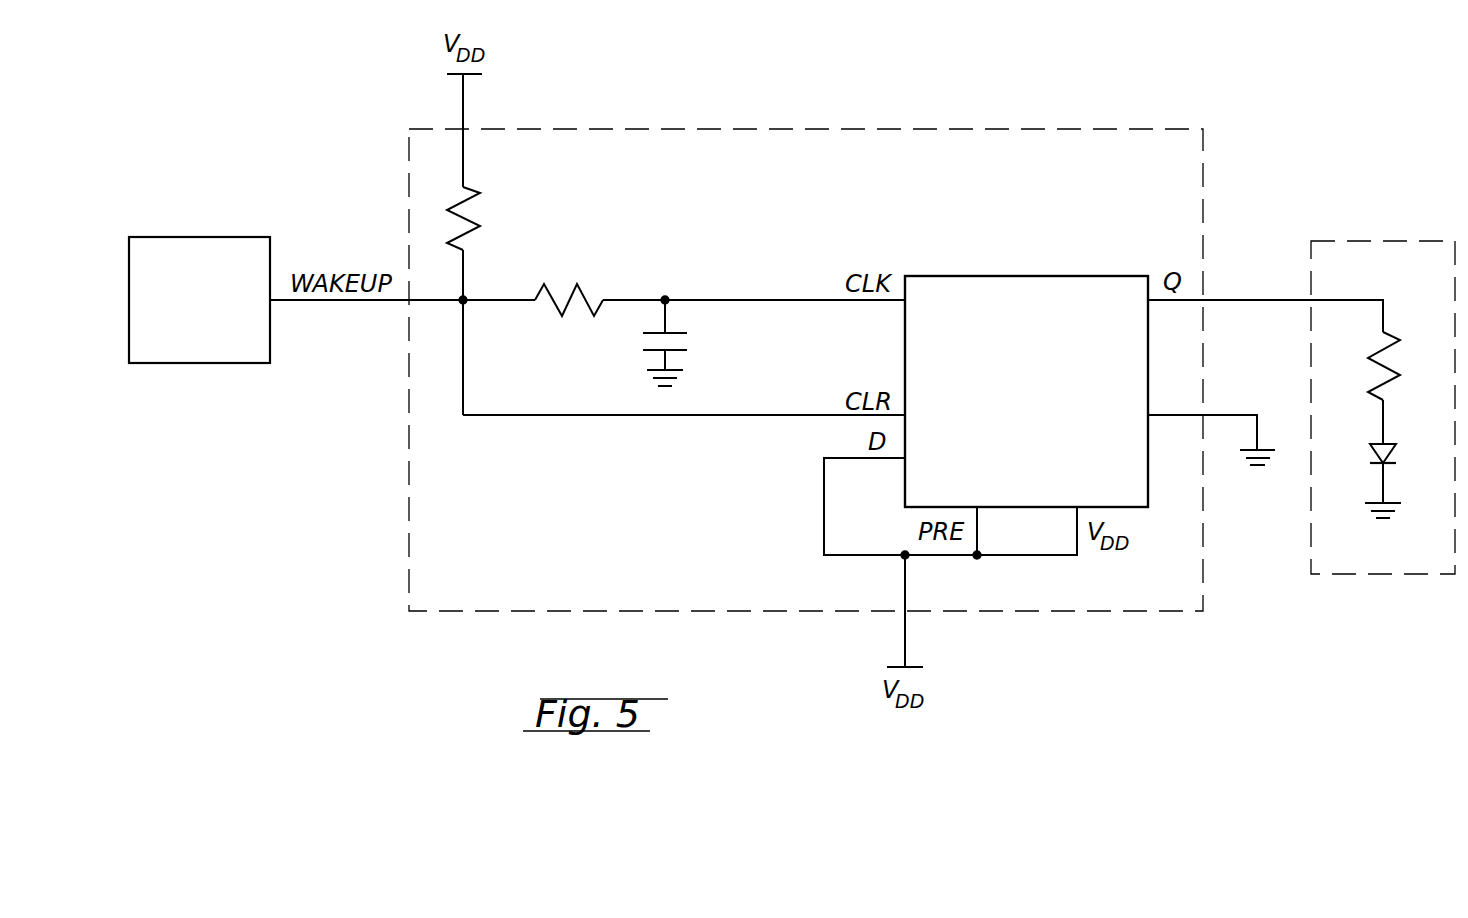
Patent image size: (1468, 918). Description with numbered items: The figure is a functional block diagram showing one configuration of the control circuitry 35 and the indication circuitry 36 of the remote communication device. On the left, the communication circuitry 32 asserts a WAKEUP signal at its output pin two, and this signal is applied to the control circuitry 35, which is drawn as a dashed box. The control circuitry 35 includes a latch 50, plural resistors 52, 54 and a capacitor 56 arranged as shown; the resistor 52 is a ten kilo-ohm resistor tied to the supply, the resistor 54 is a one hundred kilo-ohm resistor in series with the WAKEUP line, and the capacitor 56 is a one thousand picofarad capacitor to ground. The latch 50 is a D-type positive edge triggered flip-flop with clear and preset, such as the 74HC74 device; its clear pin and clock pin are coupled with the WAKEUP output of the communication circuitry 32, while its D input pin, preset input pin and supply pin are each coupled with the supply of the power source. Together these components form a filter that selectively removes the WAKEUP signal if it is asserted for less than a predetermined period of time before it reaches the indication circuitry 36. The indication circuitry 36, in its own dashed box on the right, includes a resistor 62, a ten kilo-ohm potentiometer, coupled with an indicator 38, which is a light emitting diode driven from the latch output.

The communication circuitry 32 is at (232, 363).
The control circuitry 35 is at (847, 128).
The indication circuitry 36 is at (1367, 240).
The indicator 38 is at (1395, 455).
The latch 50 is at (1033, 276).
The resistor 52 is at (470, 222).
The resistor 54 is at (555, 306).
The capacitor 56 is at (690, 340).
The resistor 62 is at (1375, 373).